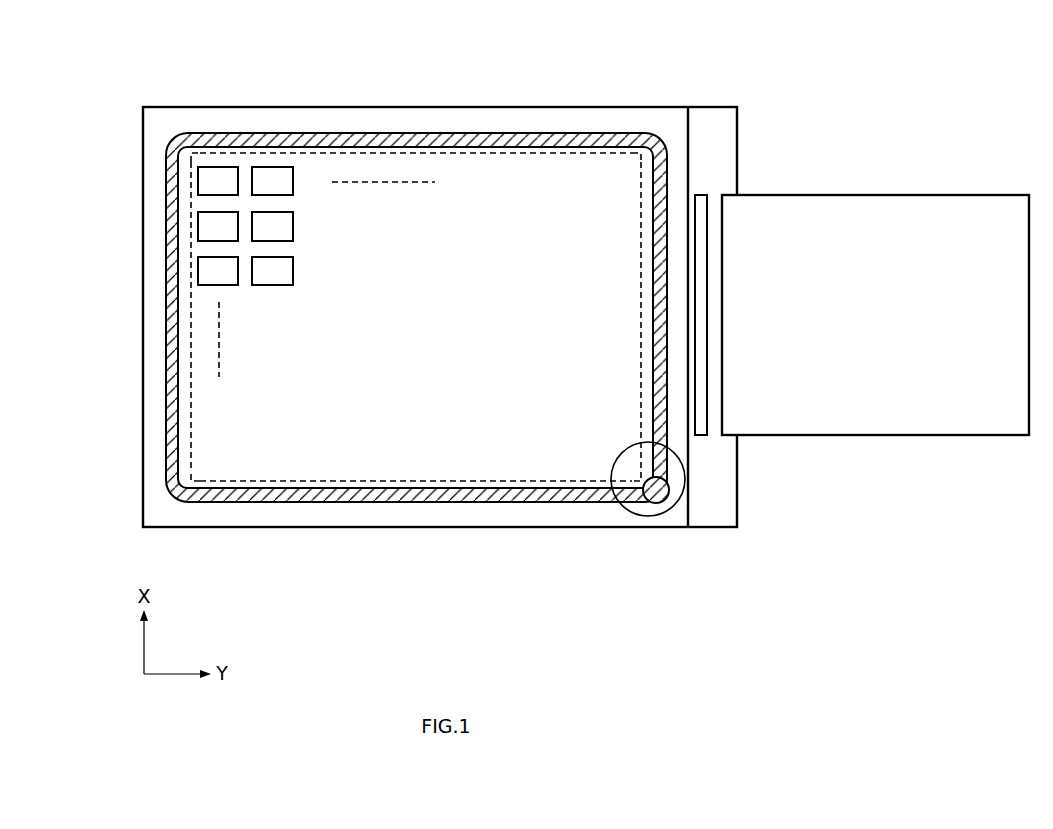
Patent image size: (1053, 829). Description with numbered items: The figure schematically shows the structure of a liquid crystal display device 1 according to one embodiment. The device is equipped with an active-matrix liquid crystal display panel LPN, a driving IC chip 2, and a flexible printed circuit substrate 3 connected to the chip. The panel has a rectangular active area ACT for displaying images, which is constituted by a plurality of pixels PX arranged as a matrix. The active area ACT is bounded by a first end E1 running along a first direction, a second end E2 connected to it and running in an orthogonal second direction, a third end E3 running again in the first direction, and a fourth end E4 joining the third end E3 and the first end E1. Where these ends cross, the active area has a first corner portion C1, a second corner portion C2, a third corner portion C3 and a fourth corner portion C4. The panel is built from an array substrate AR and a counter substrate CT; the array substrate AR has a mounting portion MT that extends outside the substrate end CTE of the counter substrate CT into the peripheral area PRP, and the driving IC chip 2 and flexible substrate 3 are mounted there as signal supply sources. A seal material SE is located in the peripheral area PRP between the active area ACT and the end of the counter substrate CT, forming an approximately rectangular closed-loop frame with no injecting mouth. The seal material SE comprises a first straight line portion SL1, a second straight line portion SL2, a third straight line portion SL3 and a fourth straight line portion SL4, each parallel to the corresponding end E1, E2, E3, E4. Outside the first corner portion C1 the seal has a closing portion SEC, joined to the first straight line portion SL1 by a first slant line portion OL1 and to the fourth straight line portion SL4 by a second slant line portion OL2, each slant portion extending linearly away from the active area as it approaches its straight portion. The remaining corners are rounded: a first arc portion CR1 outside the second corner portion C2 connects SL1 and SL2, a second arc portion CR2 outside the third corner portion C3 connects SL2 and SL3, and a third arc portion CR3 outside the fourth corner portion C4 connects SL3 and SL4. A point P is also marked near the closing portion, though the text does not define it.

The liquid crystal display device 1 is at (552, 315).
The driving IC chip 2 is at (705, 192).
The flexible printed circuit substrate 3 is at (886, 200).
The array substrate AR is at (731, 497).
The counter substrate CT is at (637, 316).
The substrate end CTE is at (694, 128).
The seal material SE is at (389, 302).
The first straight line portion SL1 is at (666, 180).
The second straight line portion SL2 is at (392, 140).
The third straight line portion SL3 is at (172, 243).
The fourth straight line portion SL4 is at (343, 498).
The first arc portion CR1 is at (663, 136).
The second arc portion CR2 is at (172, 132).
The third arc portion CR3 is at (171, 502).
The active area ACT is at (428, 306).
The first end E1 is at (641, 259).
The second end E2 is at (440, 152).
The third end E3 is at (190, 223).
The fourth end E4 is at (410, 483).
The first corner portion C1 is at (637, 474).
The second corner portion C2 is at (637, 158).
The third corner portion C3 is at (192, 151).
The fourth corner portion C4 is at (195, 480).
The pixel PX is at (217, 166).
The peripheral area PRP is at (156, 370).
The mounting portion MT is at (751, 317).
The closing portion SEC is at (659, 503).
The point P is at (636, 505).
The first slant line portion OL1 is at (662, 470).
The second slant line portion OL2 is at (636, 502).
The liquid crystal display panel LPN is at (716, 532).